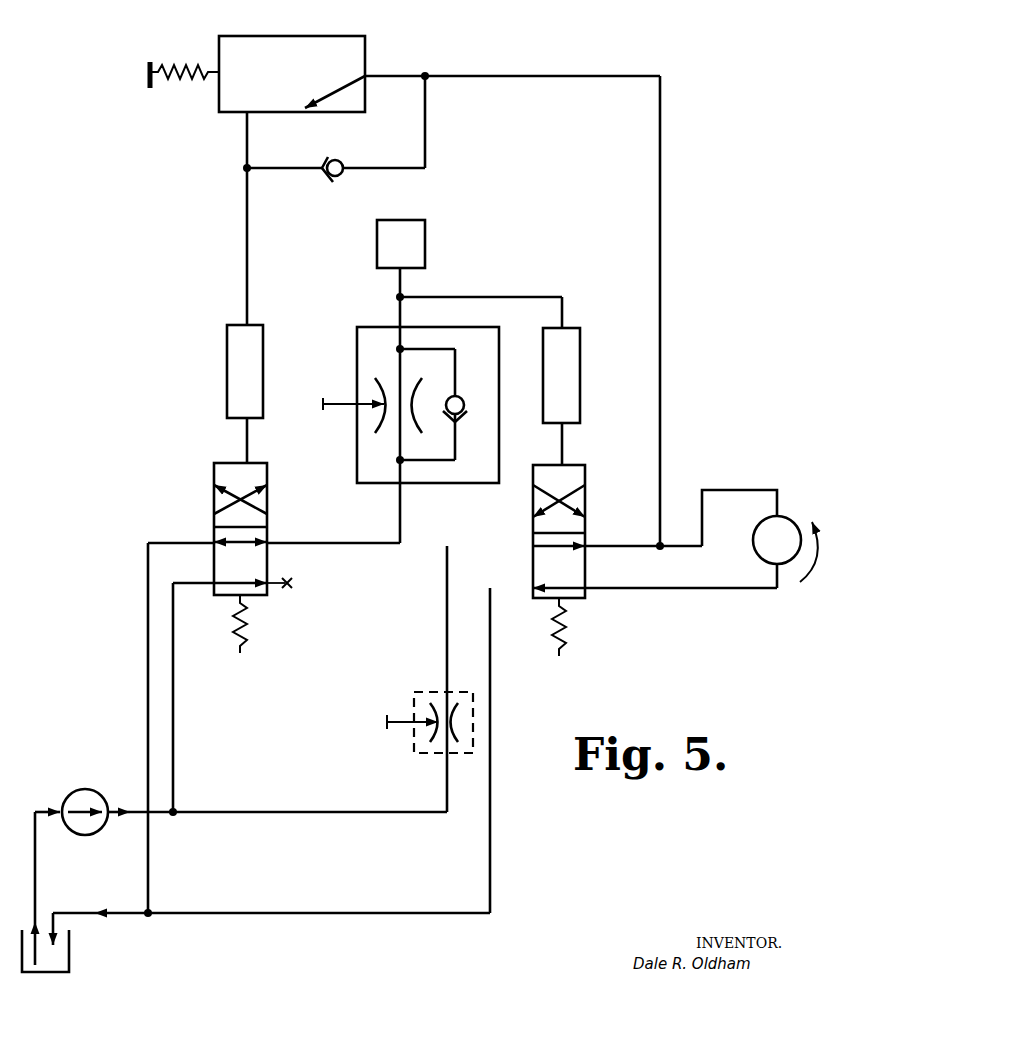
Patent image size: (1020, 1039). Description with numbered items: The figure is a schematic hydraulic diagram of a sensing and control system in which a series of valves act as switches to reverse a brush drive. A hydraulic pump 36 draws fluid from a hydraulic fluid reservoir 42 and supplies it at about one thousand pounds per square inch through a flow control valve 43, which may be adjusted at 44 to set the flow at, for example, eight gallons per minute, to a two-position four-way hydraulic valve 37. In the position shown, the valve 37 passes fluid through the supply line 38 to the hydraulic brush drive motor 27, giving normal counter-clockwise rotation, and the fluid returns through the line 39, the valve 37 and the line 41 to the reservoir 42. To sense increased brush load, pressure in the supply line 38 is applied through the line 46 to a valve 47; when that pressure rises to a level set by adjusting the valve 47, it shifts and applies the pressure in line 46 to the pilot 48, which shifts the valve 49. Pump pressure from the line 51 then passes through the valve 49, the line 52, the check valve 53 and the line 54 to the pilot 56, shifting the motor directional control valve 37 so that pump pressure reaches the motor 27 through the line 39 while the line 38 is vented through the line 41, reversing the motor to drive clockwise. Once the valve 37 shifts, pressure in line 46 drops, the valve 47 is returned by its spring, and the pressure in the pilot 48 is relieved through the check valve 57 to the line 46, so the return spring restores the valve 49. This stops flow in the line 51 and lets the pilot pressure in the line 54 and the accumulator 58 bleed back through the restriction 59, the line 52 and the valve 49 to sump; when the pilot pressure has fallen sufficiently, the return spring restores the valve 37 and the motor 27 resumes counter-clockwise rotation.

The hydraulic brush drive motor 27 is at (785, 518).
The hydraulic pump 36 is at (98, 782).
The two-position four-way hydraulic valve 37 is at (597, 605).
The supply line 38 is at (722, 490).
The line 39 is at (720, 598).
The line 41 is at (346, 913).
The hydraulic fluid reservoir 42 is at (80, 962).
The flow control valve 43 is at (413, 695).
The adjustment of flow control valve 44 is at (386, 720).
The line 46 is at (660, 152).
The valve 47 is at (272, 35).
The pilot 48 is at (263, 338).
The valve 49 is at (213, 506).
The line 51 is at (173, 713).
The line 52 is at (332, 548).
The check valve 53 is at (466, 385).
The line 54 is at (470, 300).
The pilot 56 is at (580, 418).
The check valve 57 is at (338, 178).
The accumulator 58 is at (377, 256).
The restriction 59 is at (362, 422).